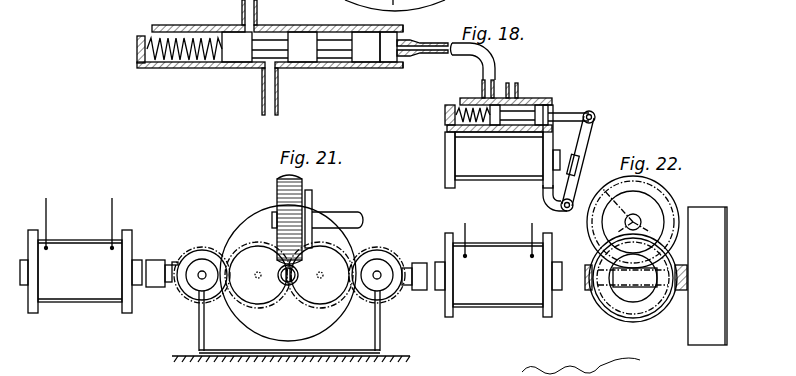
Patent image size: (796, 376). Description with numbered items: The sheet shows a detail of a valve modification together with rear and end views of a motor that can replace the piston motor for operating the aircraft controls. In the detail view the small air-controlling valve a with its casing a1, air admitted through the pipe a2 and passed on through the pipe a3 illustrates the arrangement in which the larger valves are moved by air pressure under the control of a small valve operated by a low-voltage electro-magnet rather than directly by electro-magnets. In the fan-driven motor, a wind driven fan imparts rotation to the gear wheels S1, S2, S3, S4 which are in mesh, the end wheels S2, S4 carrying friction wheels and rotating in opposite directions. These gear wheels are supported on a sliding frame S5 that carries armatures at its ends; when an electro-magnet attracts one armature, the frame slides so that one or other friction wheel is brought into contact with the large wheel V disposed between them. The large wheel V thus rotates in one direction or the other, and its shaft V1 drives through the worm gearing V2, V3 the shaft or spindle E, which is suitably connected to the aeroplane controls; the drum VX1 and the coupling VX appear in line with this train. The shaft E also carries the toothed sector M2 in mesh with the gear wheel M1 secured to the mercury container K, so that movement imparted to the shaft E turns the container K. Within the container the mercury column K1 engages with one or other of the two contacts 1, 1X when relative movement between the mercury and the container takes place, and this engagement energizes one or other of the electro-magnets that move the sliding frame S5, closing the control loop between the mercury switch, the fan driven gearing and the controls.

In FIG. 18, the valve body a is at (497, 118).
In FIG. 18, the valve casing a1 is at (452, 150).
In FIG. 18, the inlet tube a2 is at (520, 86).
In FIG. 18, the elbow pipe a3 is at (487, 64).
In FIG. 21, the large wheel V is at (156, 288).
In FIG. 22, the large wheel V is at (707, 276).
In FIG. 21, the shaft of the large wheel V1 is at (290, 310).
In FIG. 22, the shaft of the large wheel V1 is at (681, 294).
In FIG. 21, the worm gearing V2 is at (300, 265).
In FIG. 22, the worm gearing V2 is at (591, 292).
In FIG. 21, the worm gearing V3 is at (305, 219).
In FIG. 22, the worm gearing V3 is at (666, 190).
In FIG. 21, the coupling block VX is at (419, 292).
In FIG. 21, the drum VX1 is at (498, 270).
In FIG. 21, the gear wheel S1 is at (250, 300).
In FIG. 21, the end gear wheel S2 is at (192, 300).
In FIG. 21, the gear wheel S3 is at (330, 250).
In FIG. 21, the end gear wheel S4 is at (396, 262).
In FIG. 21, the sliding frame S5 is at (175, 262).
In FIG. 21, the shaft or spindle E is at (348, 212).
In FIG. 22, the shaft or spindle E is at (641, 220).
In FIG. 22, the gear wheel M1 is at (627, 316).
In FIG. 22, the toothed sector M2 is at (612, 186).
In FIG. 22, the mercury container K is at (602, 312).
In FIG. 22, the mercury column K1 is at (651, 312).
In FIG. 22, the contact 1 is at (596, 276).
In FIG. 22, the contact 1X is at (674, 260).